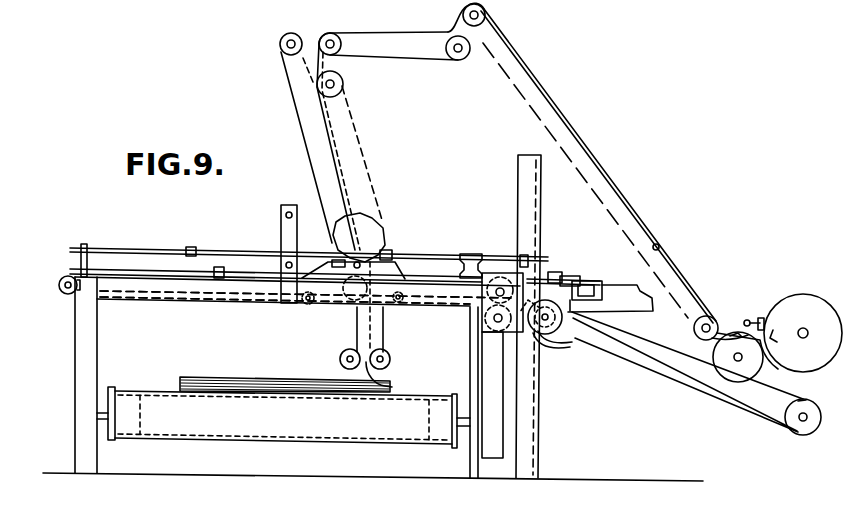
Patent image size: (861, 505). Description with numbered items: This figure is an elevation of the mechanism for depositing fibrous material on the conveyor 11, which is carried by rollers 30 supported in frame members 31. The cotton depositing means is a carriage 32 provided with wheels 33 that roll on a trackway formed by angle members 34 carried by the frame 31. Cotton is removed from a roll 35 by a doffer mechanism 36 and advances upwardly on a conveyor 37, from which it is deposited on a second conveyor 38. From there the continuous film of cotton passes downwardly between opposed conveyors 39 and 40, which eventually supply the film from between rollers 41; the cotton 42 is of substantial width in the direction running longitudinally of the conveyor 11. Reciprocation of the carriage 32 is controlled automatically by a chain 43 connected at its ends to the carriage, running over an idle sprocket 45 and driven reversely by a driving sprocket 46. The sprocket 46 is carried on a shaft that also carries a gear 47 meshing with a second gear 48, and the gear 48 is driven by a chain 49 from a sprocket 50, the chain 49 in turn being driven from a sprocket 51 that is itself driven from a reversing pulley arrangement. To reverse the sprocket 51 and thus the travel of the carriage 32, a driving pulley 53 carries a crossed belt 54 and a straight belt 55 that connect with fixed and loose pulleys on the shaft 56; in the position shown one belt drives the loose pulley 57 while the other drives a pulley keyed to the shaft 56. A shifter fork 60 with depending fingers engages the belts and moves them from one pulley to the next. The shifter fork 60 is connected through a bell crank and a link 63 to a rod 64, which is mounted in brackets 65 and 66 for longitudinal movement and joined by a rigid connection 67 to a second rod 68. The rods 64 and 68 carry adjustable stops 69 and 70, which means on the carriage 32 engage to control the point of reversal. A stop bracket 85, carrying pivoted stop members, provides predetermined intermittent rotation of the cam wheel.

The conveyor 11 is at (134, 390).
The rollers 30 is at (107, 436).
The frame members 31 is at (78, 362).
The carriage 32 is at (395, 258).
The wheels 33 is at (308, 300).
The angle members 34 is at (170, 297).
The roll 35 is at (806, 296).
The doffer mechanism 36 is at (751, 320).
The conveyor 37 is at (659, 247).
The second conveyor 38 is at (416, 59).
The opposed conveyor 39 is at (364, 147).
The opposed conveyor 40 is at (309, 151).
The rollers 41 is at (386, 357).
The cotton 42 is at (462, 7).
The chain 43 is at (217, 298).
The idle sprocket 45 is at (59, 285).
The driving sprocket 46 is at (499, 277).
The gear 47 is at (513, 273).
The gear 48 is at (481, 321).
The chain 49 is at (546, 343).
The sprocket 50 is at (518, 336).
The sprocket 51 is at (549, 293).
The driving pulley 53 is at (817, 419).
The crossed belt 54 is at (715, 390).
The straight belt 55 is at (652, 374).
The shaft 56 is at (617, 321).
The loose pulley 57 is at (552, 302).
The shifter fork 60 is at (576, 348).
The link 63 is at (565, 277).
The rod 64 is at (144, 275).
The bracket 65 is at (543, 257).
The bracket 66 is at (88, 250).
The rigid connection 67 is at (470, 254).
The second rod 68 is at (160, 249).
The adjustable stop 69 is at (224, 273).
The adjustable stop 70 is at (194, 250).
The stop bracket 85 is at (282, 232).